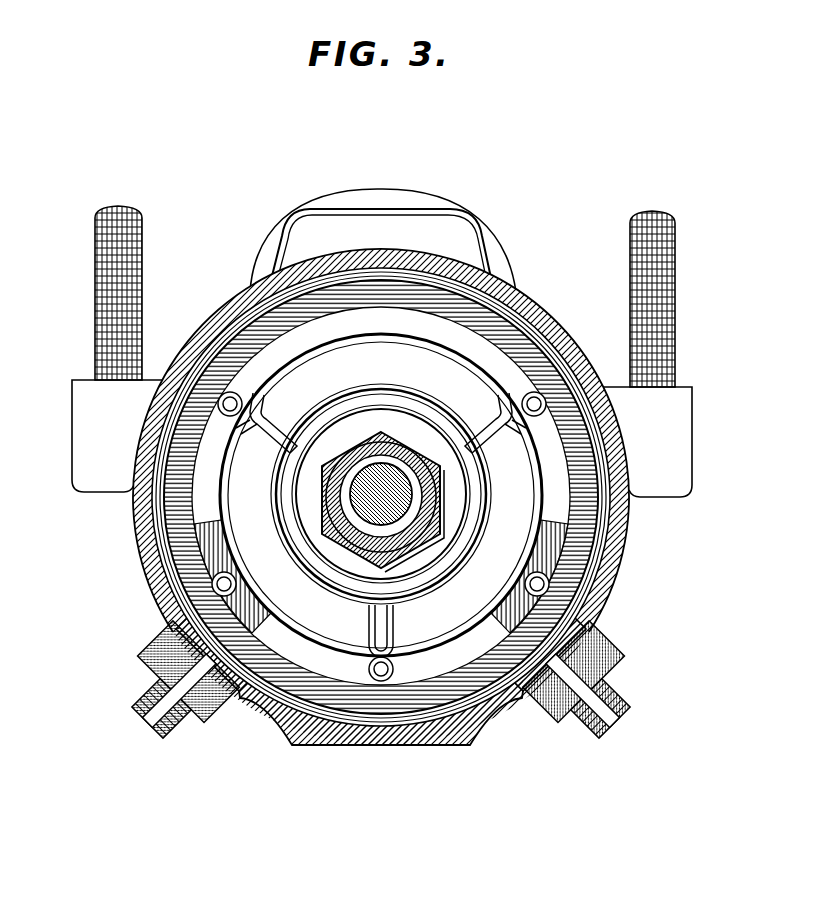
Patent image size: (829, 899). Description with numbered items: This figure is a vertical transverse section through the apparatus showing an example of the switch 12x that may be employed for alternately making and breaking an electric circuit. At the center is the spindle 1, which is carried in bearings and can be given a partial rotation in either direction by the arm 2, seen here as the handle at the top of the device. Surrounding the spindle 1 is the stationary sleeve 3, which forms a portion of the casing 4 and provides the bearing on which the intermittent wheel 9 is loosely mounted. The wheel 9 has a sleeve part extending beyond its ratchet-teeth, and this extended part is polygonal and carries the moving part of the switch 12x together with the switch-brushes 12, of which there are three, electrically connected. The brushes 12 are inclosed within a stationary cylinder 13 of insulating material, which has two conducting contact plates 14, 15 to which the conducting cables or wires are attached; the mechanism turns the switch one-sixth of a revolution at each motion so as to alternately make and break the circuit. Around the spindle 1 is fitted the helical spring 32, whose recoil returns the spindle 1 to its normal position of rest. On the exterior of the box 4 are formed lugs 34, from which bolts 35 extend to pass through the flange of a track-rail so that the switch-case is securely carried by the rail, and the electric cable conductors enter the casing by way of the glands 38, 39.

The spindle 1 is at (430, 491).
The arm 2 is at (456, 206).
The stationary sleeve 3 is at (413, 453).
The casing 4 is at (154, 581).
The intermittent wheel 9 is at (328, 466).
The switch-brushes 12 is at (270, 443).
The switch 12x is at (374, 430).
The stationary cylinder 13 is at (408, 328).
The contact plate 14 is at (262, 598).
The contact plate 15 is at (501, 607).
The helical spring 32 is at (440, 520).
The lugs 34 is at (100, 486).
The bolts 35 is at (142, 313).
The gland 38 is at (608, 692).
The gland 39 is at (216, 718).